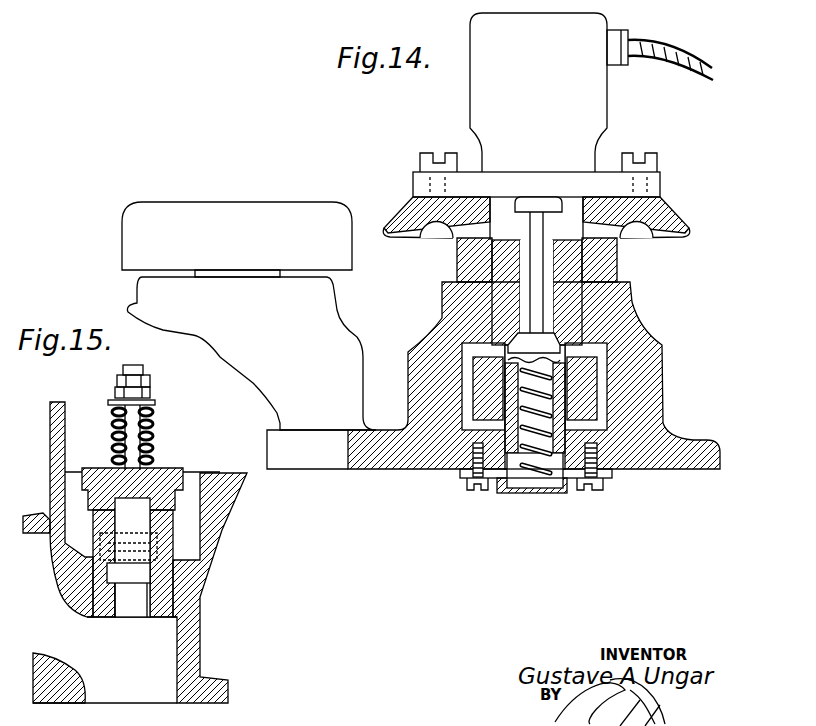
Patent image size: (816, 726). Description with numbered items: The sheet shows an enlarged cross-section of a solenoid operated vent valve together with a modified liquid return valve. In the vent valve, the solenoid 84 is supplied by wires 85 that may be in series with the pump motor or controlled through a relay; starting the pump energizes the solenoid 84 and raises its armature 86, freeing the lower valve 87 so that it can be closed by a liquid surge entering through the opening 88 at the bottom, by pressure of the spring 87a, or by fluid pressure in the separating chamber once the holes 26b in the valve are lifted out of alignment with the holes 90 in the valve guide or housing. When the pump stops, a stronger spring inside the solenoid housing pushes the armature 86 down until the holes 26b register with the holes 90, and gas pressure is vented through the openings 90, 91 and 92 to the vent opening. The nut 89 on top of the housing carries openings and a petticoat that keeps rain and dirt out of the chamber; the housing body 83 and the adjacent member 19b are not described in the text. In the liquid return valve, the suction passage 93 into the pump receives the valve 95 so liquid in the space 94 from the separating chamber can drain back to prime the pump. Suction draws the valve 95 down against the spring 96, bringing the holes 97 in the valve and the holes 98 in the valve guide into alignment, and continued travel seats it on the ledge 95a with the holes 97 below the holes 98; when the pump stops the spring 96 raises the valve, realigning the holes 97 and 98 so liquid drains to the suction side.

In FIG. 14, the solenoid 84 is at (549, 92).
In FIG. 14, the wires 85 is at (682, 54).
In FIG. 14, the armature 86 is at (537, 243).
In FIG. 14, the nut 89 is at (602, 268).
In FIG. 14, the valve housing 83 is at (632, 312).
In FIG. 14, the opening 92 is at (583, 352).
In FIG. 14, the opening 91 is at (603, 390).
In FIG. 14, the holes in the valve 26b is at (507, 408).
In FIG. 14, the holes in the valve guide 90 is at (448, 470).
In FIG. 14, the valve 87 is at (508, 474).
In FIG. 14, the spring 87a is at (518, 478).
In FIG. 14, the opening 88 is at (537, 497).
In FIG. 14, the lever 19b is at (249, 316).
In FIG. 15, the spring 96 is at (153, 434).
In FIG. 15, the space 94 is at (190, 503).
In FIG. 15, the holes in the valve guide 98 is at (157, 550).
In FIG. 15, the ledge 95a is at (157, 572).
In FIG. 15, the liquid return valve 95 is at (118, 564).
In FIG. 15, the suction passage 93 is at (135, 552).
In FIG. 15, the holes in the valve 97 is at (132, 557).